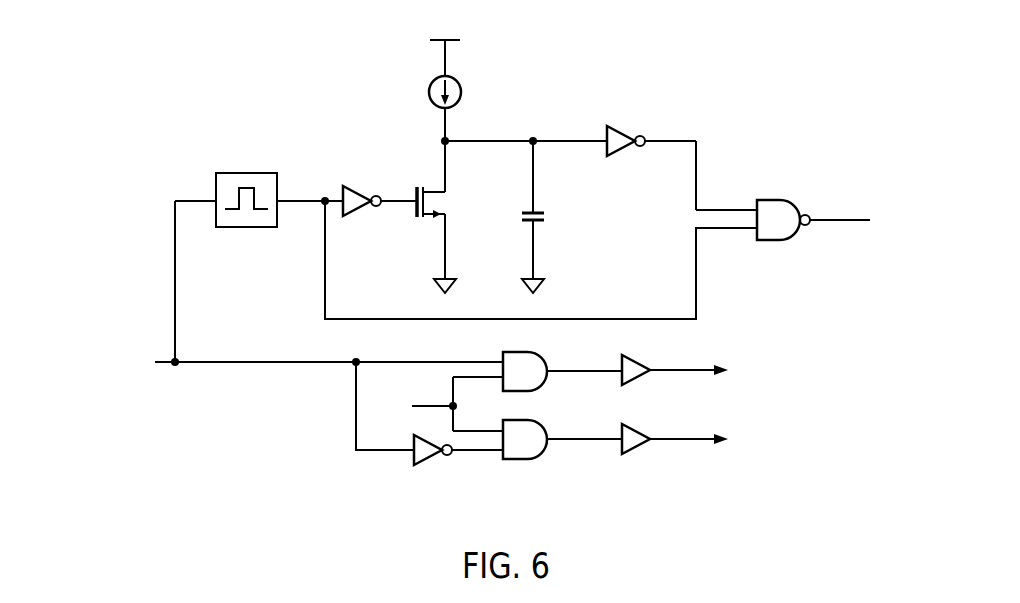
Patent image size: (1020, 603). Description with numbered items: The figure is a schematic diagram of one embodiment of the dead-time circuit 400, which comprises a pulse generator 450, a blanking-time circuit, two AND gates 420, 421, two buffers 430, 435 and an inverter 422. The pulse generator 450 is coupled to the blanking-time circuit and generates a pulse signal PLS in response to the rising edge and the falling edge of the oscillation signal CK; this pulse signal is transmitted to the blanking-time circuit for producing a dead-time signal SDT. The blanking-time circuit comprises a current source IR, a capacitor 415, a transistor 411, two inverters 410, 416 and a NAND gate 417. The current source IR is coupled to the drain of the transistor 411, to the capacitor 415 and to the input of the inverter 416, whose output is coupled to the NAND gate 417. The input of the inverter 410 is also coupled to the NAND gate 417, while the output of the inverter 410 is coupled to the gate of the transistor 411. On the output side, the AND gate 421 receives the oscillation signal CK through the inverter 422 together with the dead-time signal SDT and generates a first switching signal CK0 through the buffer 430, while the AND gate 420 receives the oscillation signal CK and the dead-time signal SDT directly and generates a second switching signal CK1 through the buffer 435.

The dead-time circuit 400 is at (828, 42).
The pulse generator 450 is at (249, 173).
The inverter 410 is at (362, 189).
The transistor 411 is at (420, 224).
The capacitor 415 is at (549, 218).
The inverter 416 is at (603, 128).
The NAND gate 417 is at (775, 196).
The AND gate 420 is at (520, 350).
The AND gate 421 is at (520, 462).
The inverter 422 is at (426, 466).
The buffer 430 is at (640, 357).
The buffer 435 is at (640, 425).